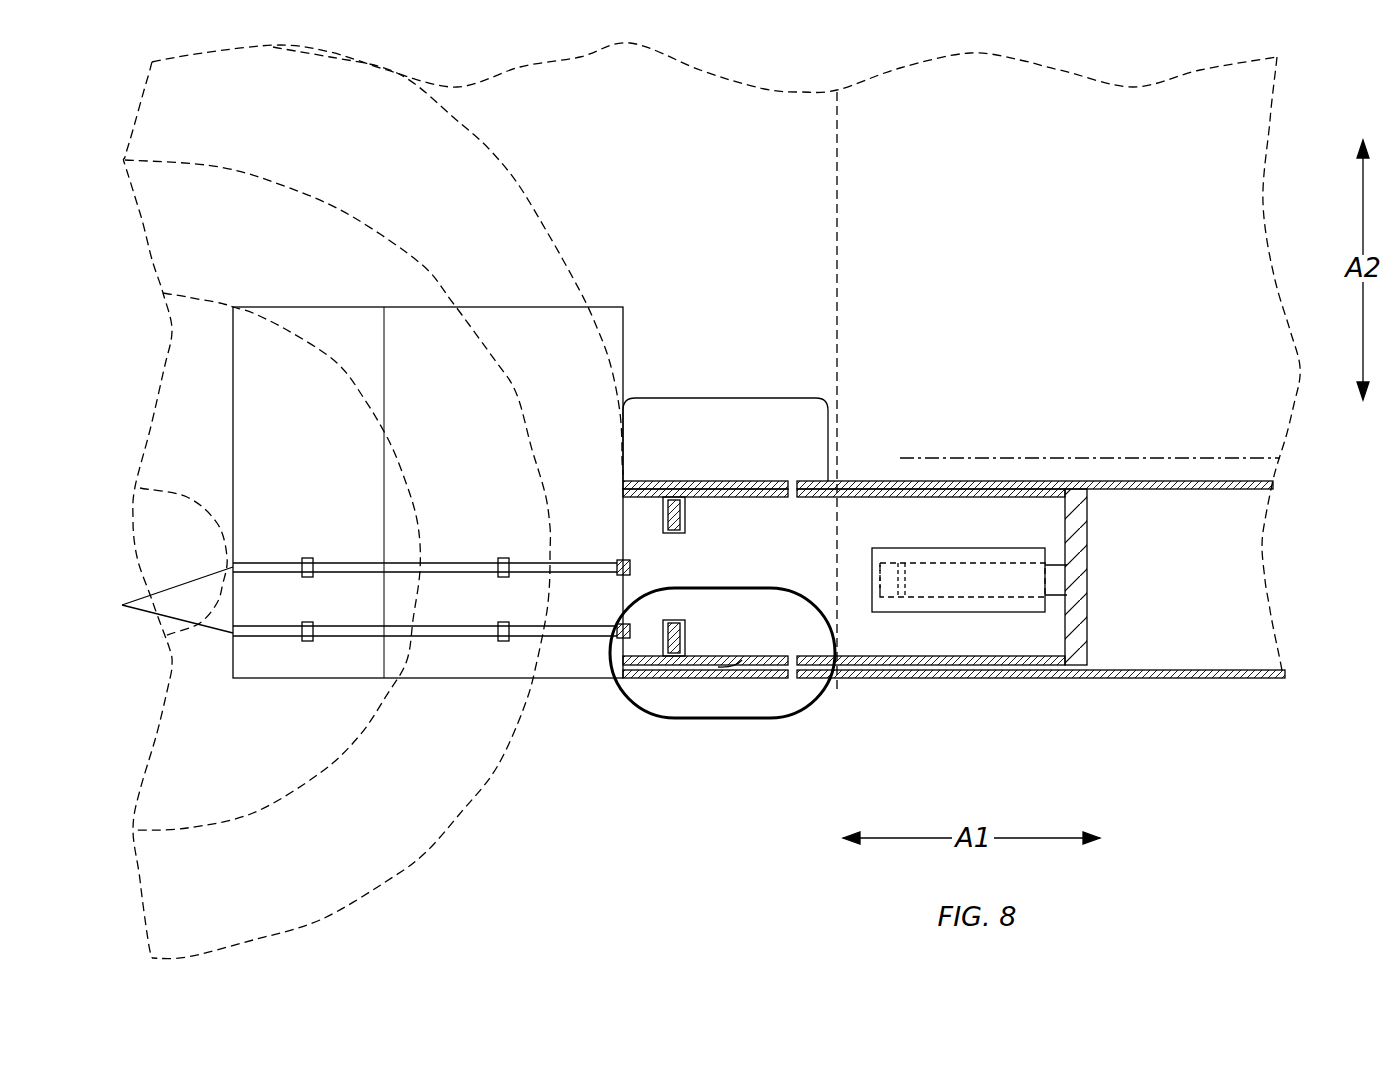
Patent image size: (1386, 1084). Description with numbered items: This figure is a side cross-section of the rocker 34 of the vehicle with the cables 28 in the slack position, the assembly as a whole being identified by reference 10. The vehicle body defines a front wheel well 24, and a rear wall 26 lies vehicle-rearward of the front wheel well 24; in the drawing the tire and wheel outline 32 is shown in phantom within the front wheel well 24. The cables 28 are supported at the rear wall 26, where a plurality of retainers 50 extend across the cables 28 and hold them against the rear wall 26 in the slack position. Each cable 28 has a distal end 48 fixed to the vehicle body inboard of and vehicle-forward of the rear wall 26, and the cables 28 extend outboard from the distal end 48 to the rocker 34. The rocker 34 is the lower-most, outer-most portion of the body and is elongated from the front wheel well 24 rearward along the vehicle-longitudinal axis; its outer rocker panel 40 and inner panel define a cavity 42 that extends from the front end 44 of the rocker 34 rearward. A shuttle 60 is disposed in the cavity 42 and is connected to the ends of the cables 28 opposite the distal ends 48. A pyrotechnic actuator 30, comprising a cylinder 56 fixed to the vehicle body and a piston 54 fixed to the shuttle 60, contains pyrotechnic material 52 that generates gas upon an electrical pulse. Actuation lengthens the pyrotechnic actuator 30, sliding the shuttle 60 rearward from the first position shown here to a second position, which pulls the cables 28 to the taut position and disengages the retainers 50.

The wheel end assembly 10 is at (678, 723).
The front wheel well 24 is at (567, 697).
The rear wall 26 is at (527, 362).
The cables 28 is at (362, 560).
The pyrotechnic actuator 30 is at (962, 548).
The wheel 32 is at (430, 853).
The rocker 34 is at (1182, 680).
The outer rocker panel 40 is at (1177, 481).
The cavity 42 is at (1229, 576).
The front end 44 is at (622, 589).
The distal end 48 is at (130, 605).
The retainers 50 is at (303, 557).
The pyrotechnic material 52 is at (887, 600).
The piston 54 is at (1060, 595).
The cylinder 56 is at (903, 600).
The shuttle 60 is at (893, 483).